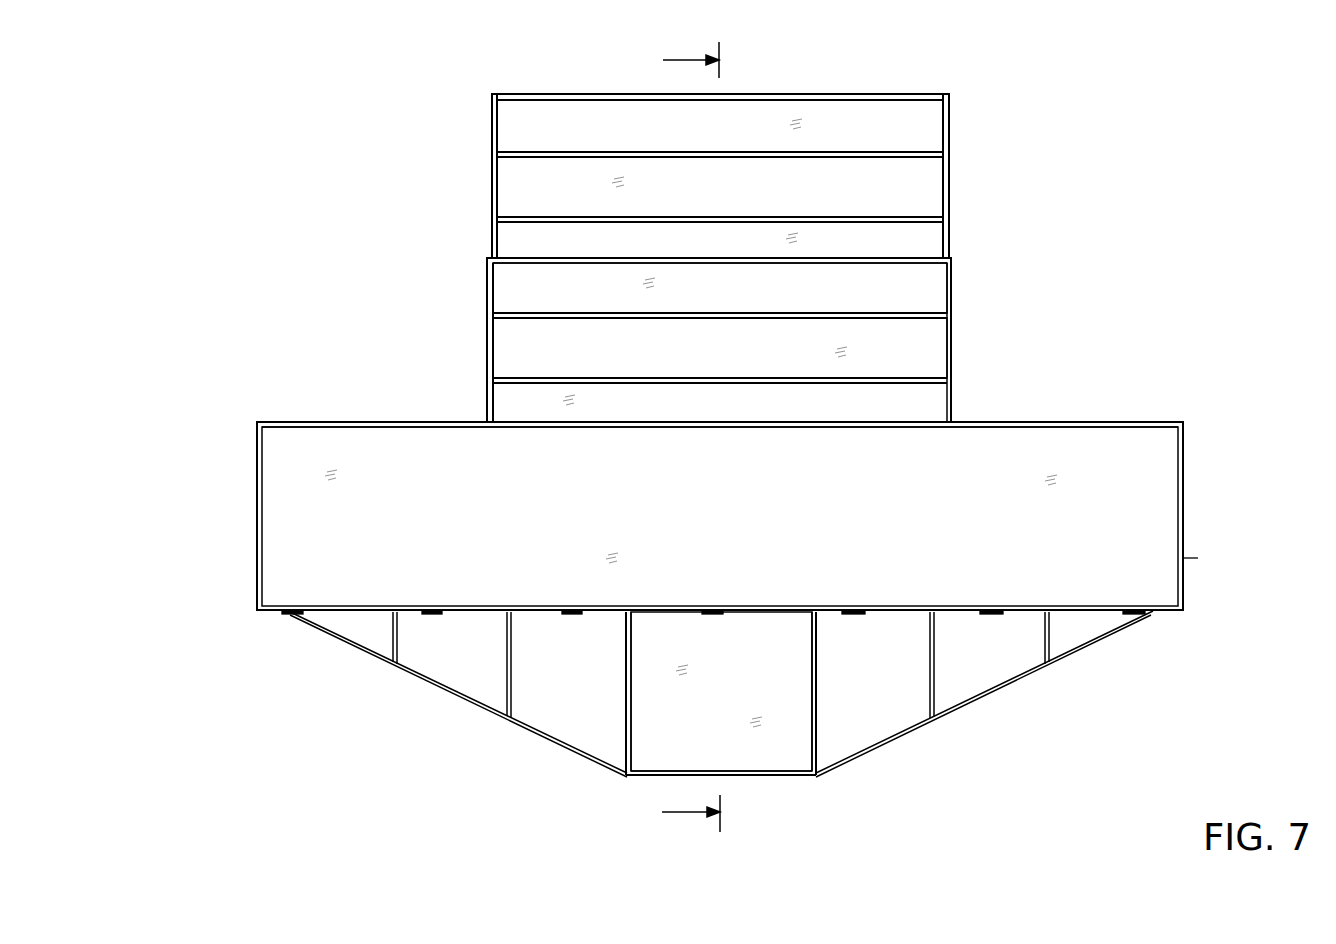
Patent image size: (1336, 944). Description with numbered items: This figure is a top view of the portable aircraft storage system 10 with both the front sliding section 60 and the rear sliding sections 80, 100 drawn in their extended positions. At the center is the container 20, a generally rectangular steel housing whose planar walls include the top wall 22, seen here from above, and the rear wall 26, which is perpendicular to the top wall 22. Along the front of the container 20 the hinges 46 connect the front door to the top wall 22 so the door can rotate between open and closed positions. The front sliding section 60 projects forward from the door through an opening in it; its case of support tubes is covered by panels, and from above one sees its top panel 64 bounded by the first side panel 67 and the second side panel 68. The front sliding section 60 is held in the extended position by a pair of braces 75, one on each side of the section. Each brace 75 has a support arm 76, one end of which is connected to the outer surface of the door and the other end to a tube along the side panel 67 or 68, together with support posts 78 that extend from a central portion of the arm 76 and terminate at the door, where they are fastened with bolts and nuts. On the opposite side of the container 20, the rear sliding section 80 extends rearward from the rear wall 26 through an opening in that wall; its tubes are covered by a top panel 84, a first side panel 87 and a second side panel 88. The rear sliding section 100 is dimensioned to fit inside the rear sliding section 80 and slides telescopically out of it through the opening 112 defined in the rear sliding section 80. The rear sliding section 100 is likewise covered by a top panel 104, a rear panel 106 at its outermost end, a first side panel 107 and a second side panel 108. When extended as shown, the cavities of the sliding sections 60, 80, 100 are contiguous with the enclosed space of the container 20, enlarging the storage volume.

The portable aircraft storage system 10 is at (243, 154).
The container 20 is at (1153, 410).
The top wall 22 is at (1093, 525).
The rear wall 26 is at (328, 422).
The hinges 46 is at (572, 615).
The front sliding section 60 is at (778, 786).
The top panel 64 is at (660, 730).
The first side panel 67 is at (627, 732).
The second side panel 68 is at (816, 703).
The braces 75 is at (467, 700).
The support arm 76 is at (868, 747).
The support posts 78 is at (935, 688).
The rear sliding section 80 is at (475, 342).
The top panel 84 is at (910, 353).
The first side panel 87 is at (952, 283).
The second side panel 88 is at (487, 362).
The rear sliding section 100 is at (478, 190).
The top panel 104 is at (918, 130).
The rear panel 106 is at (852, 93).
The first side panel 107 is at (949, 177).
The second side panel 108 is at (490, 122).
The opening 112 is at (908, 257).